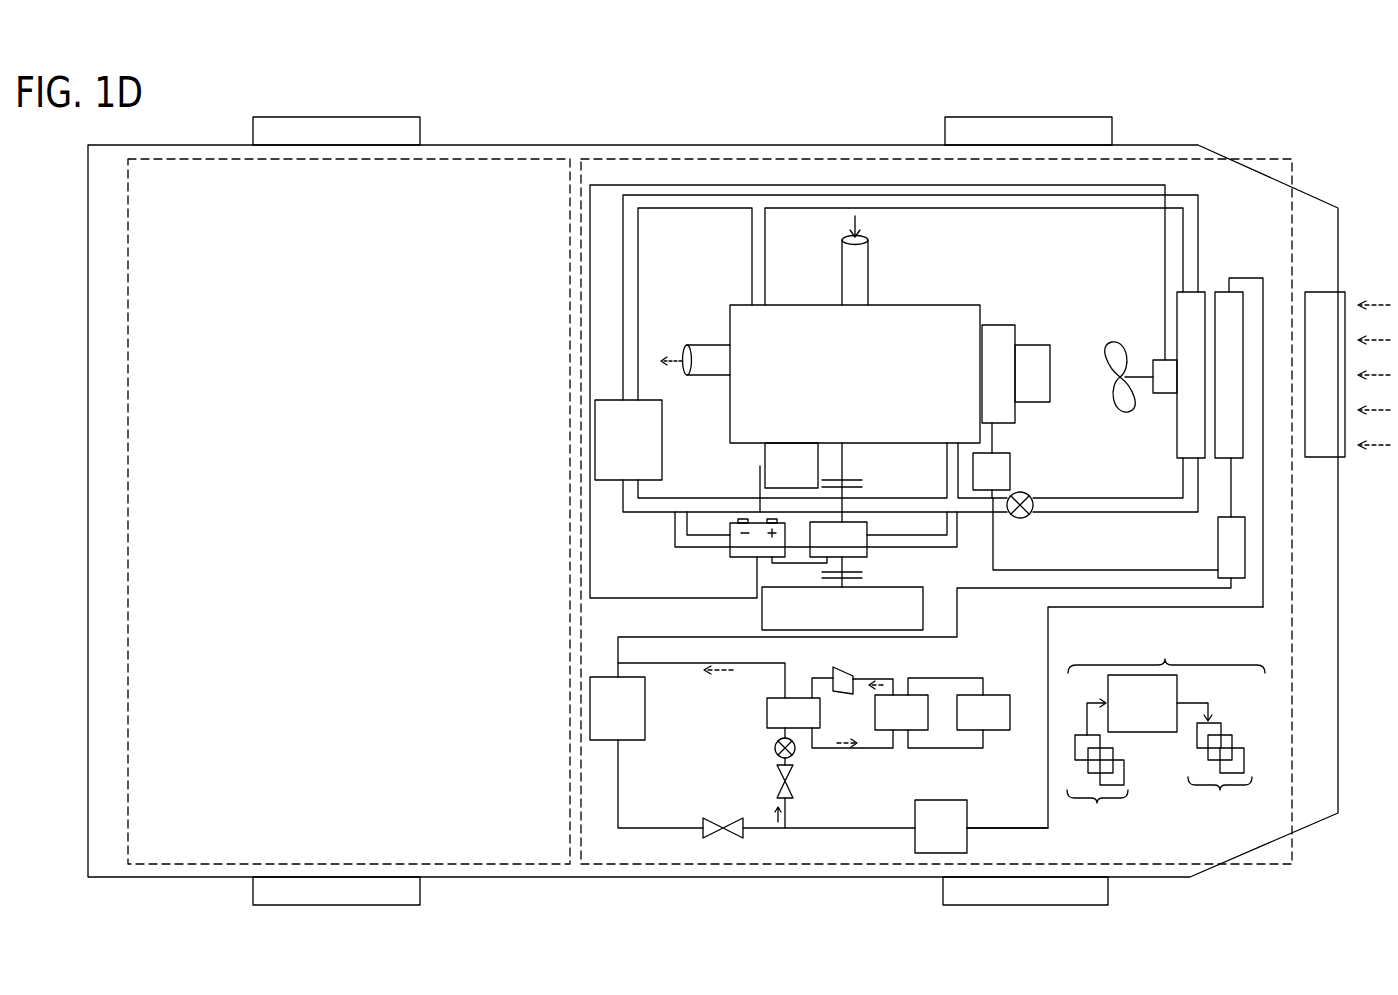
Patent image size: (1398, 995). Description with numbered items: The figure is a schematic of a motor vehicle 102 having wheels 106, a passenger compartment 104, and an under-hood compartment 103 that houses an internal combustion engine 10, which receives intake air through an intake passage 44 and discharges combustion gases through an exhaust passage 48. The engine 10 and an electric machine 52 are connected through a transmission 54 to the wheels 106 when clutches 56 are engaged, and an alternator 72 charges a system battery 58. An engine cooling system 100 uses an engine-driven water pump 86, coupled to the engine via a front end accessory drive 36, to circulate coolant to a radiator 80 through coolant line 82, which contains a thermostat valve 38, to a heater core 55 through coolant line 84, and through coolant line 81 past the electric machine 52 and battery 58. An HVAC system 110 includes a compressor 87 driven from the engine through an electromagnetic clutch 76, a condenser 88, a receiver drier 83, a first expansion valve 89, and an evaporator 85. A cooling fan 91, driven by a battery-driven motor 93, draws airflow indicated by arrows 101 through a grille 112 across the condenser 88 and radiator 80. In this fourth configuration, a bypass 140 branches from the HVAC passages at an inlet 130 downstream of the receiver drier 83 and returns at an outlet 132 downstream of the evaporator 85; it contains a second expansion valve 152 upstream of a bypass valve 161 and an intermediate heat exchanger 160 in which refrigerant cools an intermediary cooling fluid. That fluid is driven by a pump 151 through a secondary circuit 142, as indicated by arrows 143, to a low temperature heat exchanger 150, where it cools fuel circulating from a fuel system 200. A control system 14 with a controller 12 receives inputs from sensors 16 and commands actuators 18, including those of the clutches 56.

The internal combustion engine 10 is at (905, 387).
The controller 12 is at (1152, 717).
The control system 14 is at (1127, 726).
The sensors 16 is at (1098, 772).
The actuators 18 is at (1230, 765).
The front end accessory drive 36 is at (1007, 384).
The thermostat valve 38 is at (1029, 495).
The intake passage 44 is at (842, 281).
The exhaust passage 48 is at (722, 378).
The electric machine 52 is at (867, 533).
The transmission 54 is at (923, 606).
The heater core 55 is at (638, 451).
The clutch 56 is at (851, 480).
The system battery 58 is at (733, 556).
The alternator 72 is at (800, 478).
The electromagnetic clutch 76 is at (1002, 482).
The radiator 80 is at (1185, 326).
The coolant line 81 is at (688, 548).
The coolant line 82 is at (907, 209).
The receiver drier 83 is at (951, 838).
The coolant line 84 is at (728, 210).
The evaporator 85 is at (628, 718).
The engine-driven water pump 86 is at (1041, 384).
The compressor 87 is at (1241, 558).
The condenser 88 is at (1227, 453).
The first expansion valve 89 is at (719, 826).
The cooling fan 91 is at (1110, 367).
The battery-driven motor 93 is at (1152, 393).
The cooling system 100 is at (1152, 280).
The arrows 101 is at (1386, 445).
The motor vehicle 102 is at (610, 145).
The under-hood compartment 103 is at (1265, 158).
The passenger compartment 104 is at (311, 536).
The wheels 106 is at (336, 117).
The HVAC system 110 is at (1259, 256).
The grille 112 is at (1330, 460).
The inlet 130 is at (791, 829).
The outlet 132 is at (617, 663).
The bypass 140 is at (708, 752).
The secondary circuit 142 is at (897, 767).
The arrows 143 is at (848, 747).
The low temperature heat exchanger 150 is at (916, 724).
The pump 151 is at (848, 670).
The second expansion valve 152 is at (790, 786).
The intermediate heat exchanger 160 is at (807, 724).
The bypass valve 161 is at (775, 748).
The fuel system 200 is at (996, 724).